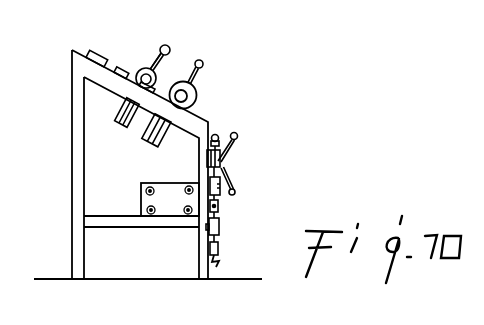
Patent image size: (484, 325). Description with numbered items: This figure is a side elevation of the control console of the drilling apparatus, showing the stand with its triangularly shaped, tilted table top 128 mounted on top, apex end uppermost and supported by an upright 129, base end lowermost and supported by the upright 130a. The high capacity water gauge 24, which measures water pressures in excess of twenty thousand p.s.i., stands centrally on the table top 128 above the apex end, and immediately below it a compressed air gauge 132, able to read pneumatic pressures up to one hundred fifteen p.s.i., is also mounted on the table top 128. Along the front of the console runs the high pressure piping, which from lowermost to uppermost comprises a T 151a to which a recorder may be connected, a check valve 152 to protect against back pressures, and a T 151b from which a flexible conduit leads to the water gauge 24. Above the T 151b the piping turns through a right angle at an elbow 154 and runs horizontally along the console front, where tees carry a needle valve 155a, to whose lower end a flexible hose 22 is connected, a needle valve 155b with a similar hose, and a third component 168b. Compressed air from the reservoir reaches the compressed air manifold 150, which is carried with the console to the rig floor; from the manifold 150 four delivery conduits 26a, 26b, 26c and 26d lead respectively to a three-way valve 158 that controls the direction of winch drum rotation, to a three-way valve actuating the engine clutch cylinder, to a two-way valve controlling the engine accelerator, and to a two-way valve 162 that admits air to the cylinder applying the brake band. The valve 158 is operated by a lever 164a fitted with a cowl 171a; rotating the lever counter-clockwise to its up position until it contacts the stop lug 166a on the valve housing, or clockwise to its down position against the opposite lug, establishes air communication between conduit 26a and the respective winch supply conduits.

The flexible hose or conduit 22 is at (219, 257).
The high capacity water gauge 24 is at (96, 50).
The delivery conduit 26a is at (151, 215).
The delivery conduit 26b is at (141, 190).
The delivery conduit 26c is at (188, 215).
The delivery conduit 26d is at (189, 186).
The table top 128 is at (204, 120).
The upright 129 is at (72, 125).
The upright 130a is at (209, 264).
The compressed air gauge 132 is at (120, 68).
The compressed air manifold 150 is at (178, 207).
The T 151a is at (220, 227).
The T 151b is at (221, 194).
The check valve 152 is at (220, 208).
The elbow 154 is at (218, 134).
The needle valve 155a is at (224, 173).
The needle valve 155b is at (238, 137).
The 3-way valve 158 is at (150, 69).
The 2-way valve 162 is at (196, 100).
The lever 164a is at (139, 72).
The stop lug 166a is at (148, 89).
The knob rod 168b is at (203, 66).
The cowl 171a is at (160, 72).